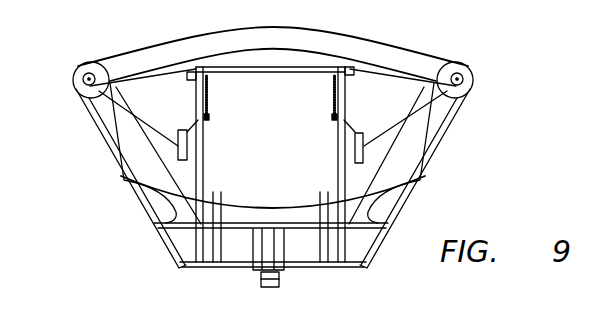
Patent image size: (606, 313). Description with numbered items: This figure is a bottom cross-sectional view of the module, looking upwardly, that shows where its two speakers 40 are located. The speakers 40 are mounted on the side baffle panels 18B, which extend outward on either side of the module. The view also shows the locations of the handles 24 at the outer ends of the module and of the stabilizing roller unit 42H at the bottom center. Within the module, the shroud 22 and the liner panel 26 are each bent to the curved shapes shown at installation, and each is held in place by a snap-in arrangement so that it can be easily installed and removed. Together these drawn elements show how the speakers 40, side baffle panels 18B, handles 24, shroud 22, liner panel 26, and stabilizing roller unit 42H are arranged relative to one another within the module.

The side baffle panels 18B is at (197, 97).
The handles 24 is at (87, 84).
The shroud 22 is at (252, 199).
The speakers 40 is at (178, 152).
The liner panel 26 is at (186, 219).
The stabilizing roller unit 42H is at (262, 276).